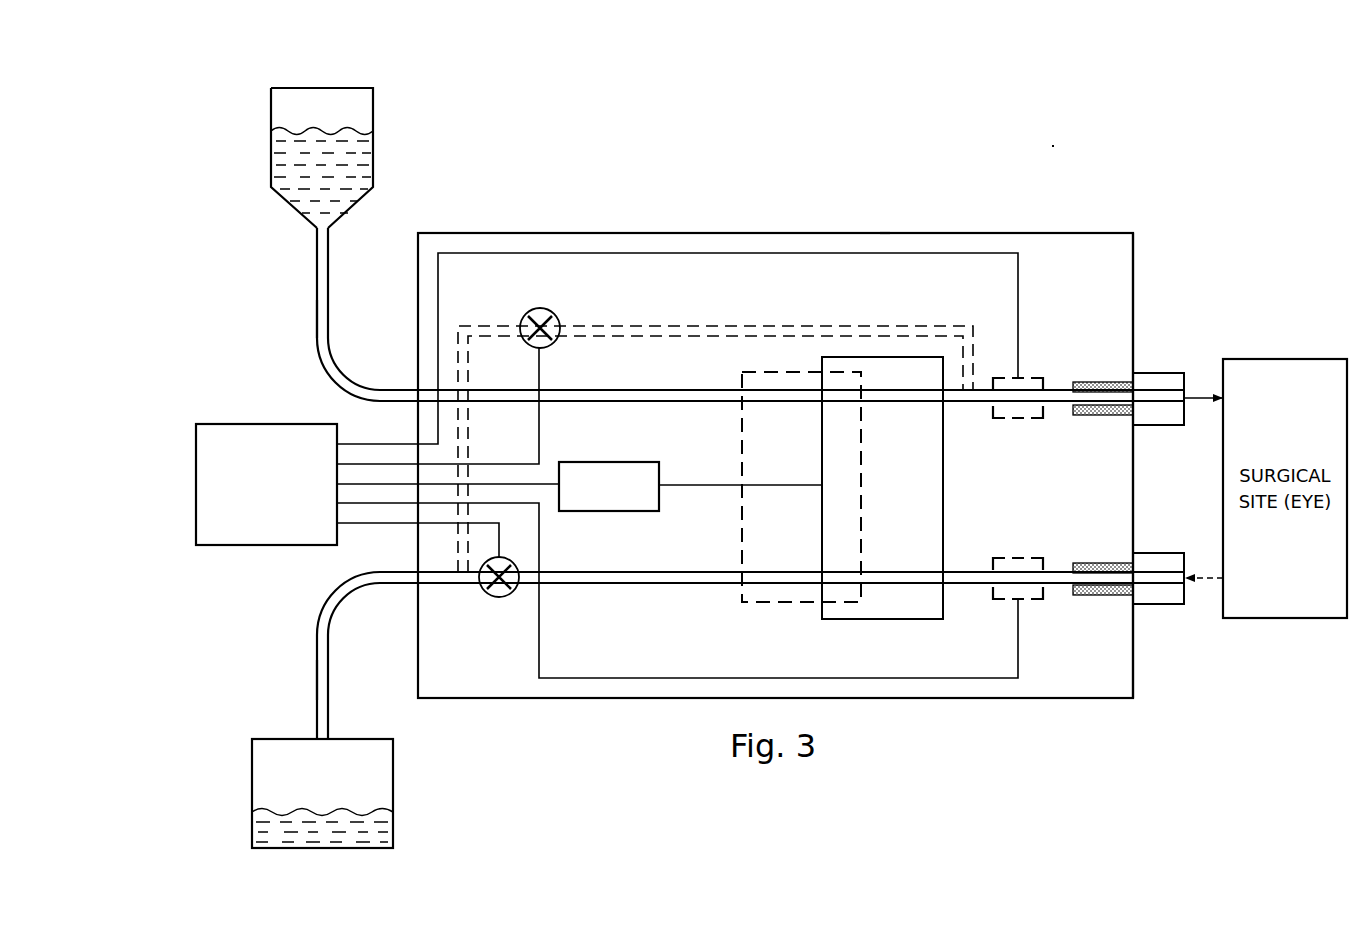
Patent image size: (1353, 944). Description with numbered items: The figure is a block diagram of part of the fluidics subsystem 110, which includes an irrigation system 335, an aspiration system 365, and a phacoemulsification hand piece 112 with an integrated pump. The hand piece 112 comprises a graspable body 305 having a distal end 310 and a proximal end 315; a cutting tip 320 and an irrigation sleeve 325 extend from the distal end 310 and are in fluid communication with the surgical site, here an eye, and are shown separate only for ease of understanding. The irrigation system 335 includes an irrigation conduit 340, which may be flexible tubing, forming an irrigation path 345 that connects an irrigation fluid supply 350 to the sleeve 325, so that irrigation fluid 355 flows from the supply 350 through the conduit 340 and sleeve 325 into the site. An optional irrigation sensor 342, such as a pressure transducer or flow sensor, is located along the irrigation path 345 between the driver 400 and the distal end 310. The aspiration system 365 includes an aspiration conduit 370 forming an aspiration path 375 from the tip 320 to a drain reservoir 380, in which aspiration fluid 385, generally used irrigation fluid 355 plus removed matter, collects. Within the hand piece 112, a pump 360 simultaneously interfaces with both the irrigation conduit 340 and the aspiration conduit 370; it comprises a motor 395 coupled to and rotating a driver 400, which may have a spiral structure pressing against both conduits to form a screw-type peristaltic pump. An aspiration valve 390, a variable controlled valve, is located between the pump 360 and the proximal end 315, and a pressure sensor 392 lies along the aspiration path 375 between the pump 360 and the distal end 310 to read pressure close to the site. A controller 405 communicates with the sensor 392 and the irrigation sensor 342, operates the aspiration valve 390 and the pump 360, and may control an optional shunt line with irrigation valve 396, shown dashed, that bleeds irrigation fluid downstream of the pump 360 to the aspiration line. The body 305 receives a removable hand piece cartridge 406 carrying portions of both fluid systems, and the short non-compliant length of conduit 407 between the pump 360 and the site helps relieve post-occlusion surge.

The fluidics subsystem 110 is at (1056, 143).
The hand piece 112 is at (884, 212).
The graspable body 305 is at (771, 233).
The distal end 310 is at (1133, 320).
The proximal end 315 is at (418, 318).
The cutting tip 320 is at (1158, 604).
The irrigation sleeve 325 is at (1158, 426).
The irrigation system 335 is at (300, 318).
The irrigation conduit 340 is at (317, 270).
The irrigation sensor 342 is at (1018, 420).
The irrigation path 345 is at (607, 401).
The irrigation fluid supply 350 is at (373, 110).
The irrigation fluid 355 is at (278, 154).
The pump 360 is at (660, 476).
The aspiration system 365 is at (302, 652).
The aspiration conduit 370 is at (316, 700).
The aspiration path 375 is at (680, 585).
The drain reservoir 380 is at (321, 850).
The aspiration fluid 385 is at (254, 823).
The aspiration valve 390 is at (498, 598).
The sensor 392 is at (1018, 556).
The motor 395 is at (614, 512).
The irrigation valve 396 is at (530, 310).
The driver 400 is at (895, 621).
The controller 405 is at (267, 546).
The removable hand piece cartridge 406 is at (788, 603).
The length of conduit 407 is at (1103, 380).